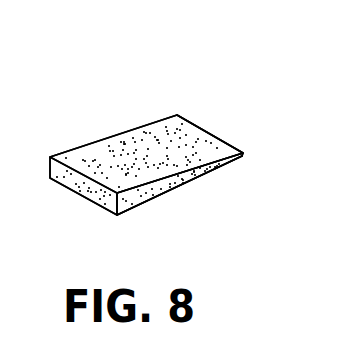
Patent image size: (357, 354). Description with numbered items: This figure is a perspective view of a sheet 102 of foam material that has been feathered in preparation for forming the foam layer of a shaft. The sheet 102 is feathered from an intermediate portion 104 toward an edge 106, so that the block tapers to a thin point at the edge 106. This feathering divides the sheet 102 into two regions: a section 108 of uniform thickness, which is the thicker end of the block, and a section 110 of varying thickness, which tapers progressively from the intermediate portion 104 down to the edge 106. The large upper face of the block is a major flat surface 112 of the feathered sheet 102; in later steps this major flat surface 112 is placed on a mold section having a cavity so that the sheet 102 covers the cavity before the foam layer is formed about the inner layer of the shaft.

The sheet 102 is at (245, 118).
The intermediate portion 104 is at (181, 188).
The edge 106 is at (243, 152).
The section of uniform thickness 108 is at (133, 216).
The section of varying thickness 110 is at (207, 173).
The major flat surface 112 is at (115, 150).